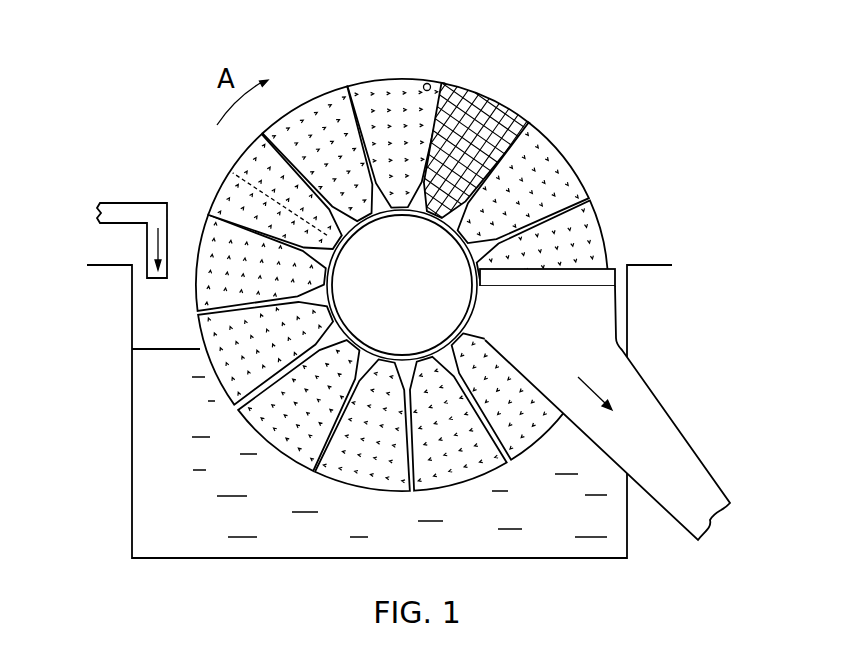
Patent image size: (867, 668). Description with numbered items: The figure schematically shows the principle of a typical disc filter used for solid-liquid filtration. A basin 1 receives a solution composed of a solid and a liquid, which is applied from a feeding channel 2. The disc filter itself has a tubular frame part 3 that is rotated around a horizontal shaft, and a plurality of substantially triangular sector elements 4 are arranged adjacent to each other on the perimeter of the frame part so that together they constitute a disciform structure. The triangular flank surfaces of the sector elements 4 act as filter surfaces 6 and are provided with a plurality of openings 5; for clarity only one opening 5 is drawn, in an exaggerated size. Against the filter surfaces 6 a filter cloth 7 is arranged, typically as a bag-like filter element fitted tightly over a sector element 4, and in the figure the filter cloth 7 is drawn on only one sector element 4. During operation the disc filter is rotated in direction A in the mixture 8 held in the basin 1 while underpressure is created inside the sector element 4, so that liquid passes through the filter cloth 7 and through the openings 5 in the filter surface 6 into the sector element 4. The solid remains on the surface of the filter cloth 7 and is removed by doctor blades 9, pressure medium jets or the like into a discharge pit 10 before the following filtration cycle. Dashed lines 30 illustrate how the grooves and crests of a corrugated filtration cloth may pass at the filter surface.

The basin 1 is at (130, 470).
The feeding channel 2 is at (133, 203).
The tubular frame part 3 is at (392, 298).
The sector elements 4 is at (567, 140).
The openings 5 is at (432, 84).
The filter surfaces 6 is at (389, 92).
The filter cloth 7 is at (503, 118).
The mixture 8 is at (170, 525).
The doctor blades 9 is at (583, 276).
The discharge pit 10 is at (653, 437).
The dashed lines 30 is at (223, 190).